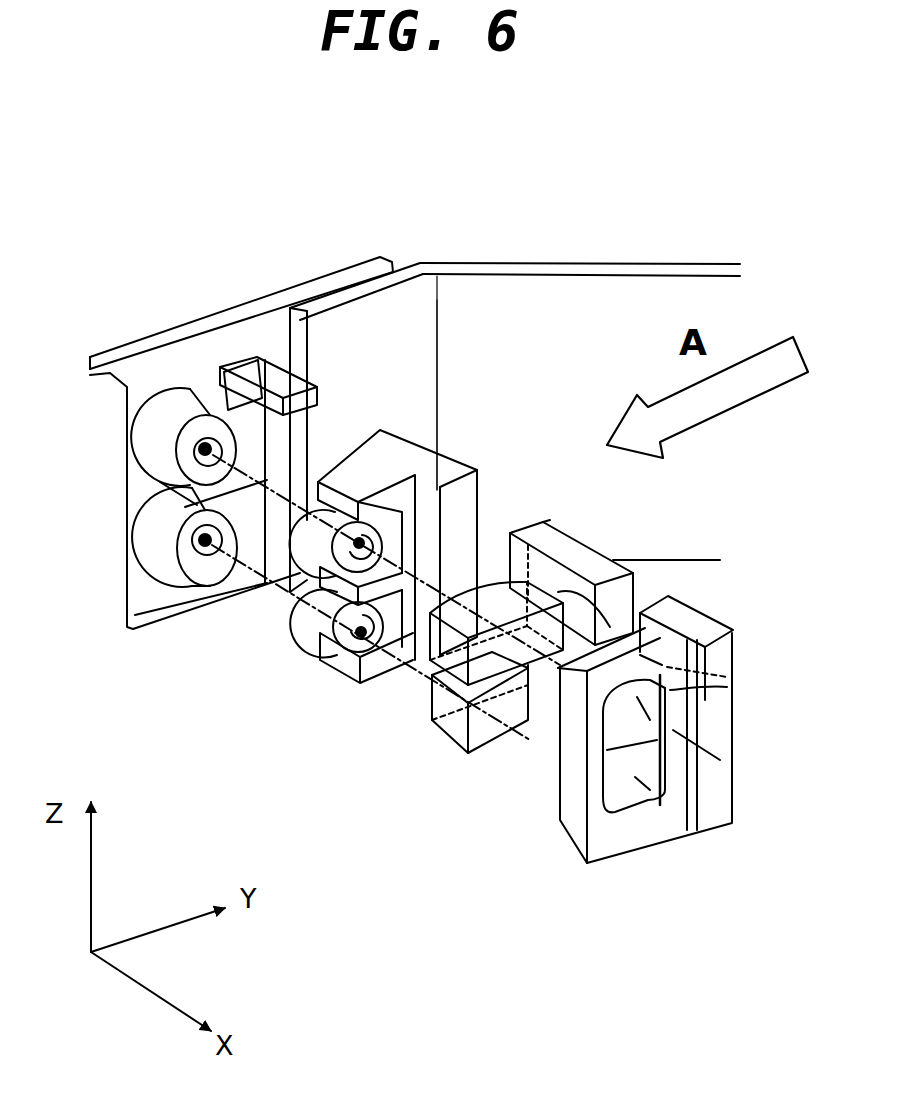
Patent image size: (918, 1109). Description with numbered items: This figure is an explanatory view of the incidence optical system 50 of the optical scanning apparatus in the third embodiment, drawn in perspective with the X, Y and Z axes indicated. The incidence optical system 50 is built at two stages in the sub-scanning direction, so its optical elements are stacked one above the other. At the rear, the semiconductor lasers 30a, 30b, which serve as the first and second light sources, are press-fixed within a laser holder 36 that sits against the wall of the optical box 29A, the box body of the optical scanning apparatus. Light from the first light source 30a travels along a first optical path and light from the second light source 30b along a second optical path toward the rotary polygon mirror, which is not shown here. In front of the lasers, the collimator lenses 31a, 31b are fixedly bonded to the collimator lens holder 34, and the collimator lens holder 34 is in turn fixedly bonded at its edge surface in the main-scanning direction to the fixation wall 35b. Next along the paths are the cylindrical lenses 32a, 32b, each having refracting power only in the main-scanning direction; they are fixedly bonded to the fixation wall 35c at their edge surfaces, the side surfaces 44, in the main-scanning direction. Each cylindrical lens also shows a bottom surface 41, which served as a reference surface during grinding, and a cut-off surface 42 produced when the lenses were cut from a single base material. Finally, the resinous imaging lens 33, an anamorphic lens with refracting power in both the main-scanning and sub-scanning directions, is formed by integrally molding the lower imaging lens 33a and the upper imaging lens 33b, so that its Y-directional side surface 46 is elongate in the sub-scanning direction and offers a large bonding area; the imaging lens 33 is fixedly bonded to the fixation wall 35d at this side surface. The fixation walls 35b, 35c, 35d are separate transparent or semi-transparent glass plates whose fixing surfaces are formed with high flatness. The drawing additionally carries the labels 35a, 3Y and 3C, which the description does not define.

The optical box 29A is at (428, 266).
The incidence optical system 50 is at (562, 356).
The laser holder 36 is at (148, 440).
The semiconductor laser (first light source) 30a is at (210, 548).
The semiconductor laser (second light source) 30b is at (210, 445).
The upper coil axis line 3Y is at (216, 452).
The lower coil axis line 3C is at (282, 588).
The first yoke piece 35a is at (270, 373).
The fixation wall 35b is at (440, 474).
The fixation wall 35c is at (560, 550).
The fixation wall 35d is at (697, 622).
The collimator lens 31a is at (313, 640).
The collimator lens 31b is at (345, 512).
The collimator lens holder 34 is at (438, 402).
The cylindrical lens 32a is at (432, 722).
The cylindrical lens 32b is at (513, 533).
The side surface 44 is at (560, 552).
The cut-off surface 42 is at (463, 605).
The bottom surface 41 is at (580, 590).
The imaging lens 33 is at (562, 822).
The lower imaging lens 33a is at (620, 812).
The upper imaging lens 33b is at (727, 687).
The Y-directional side surface 46 is at (733, 653).